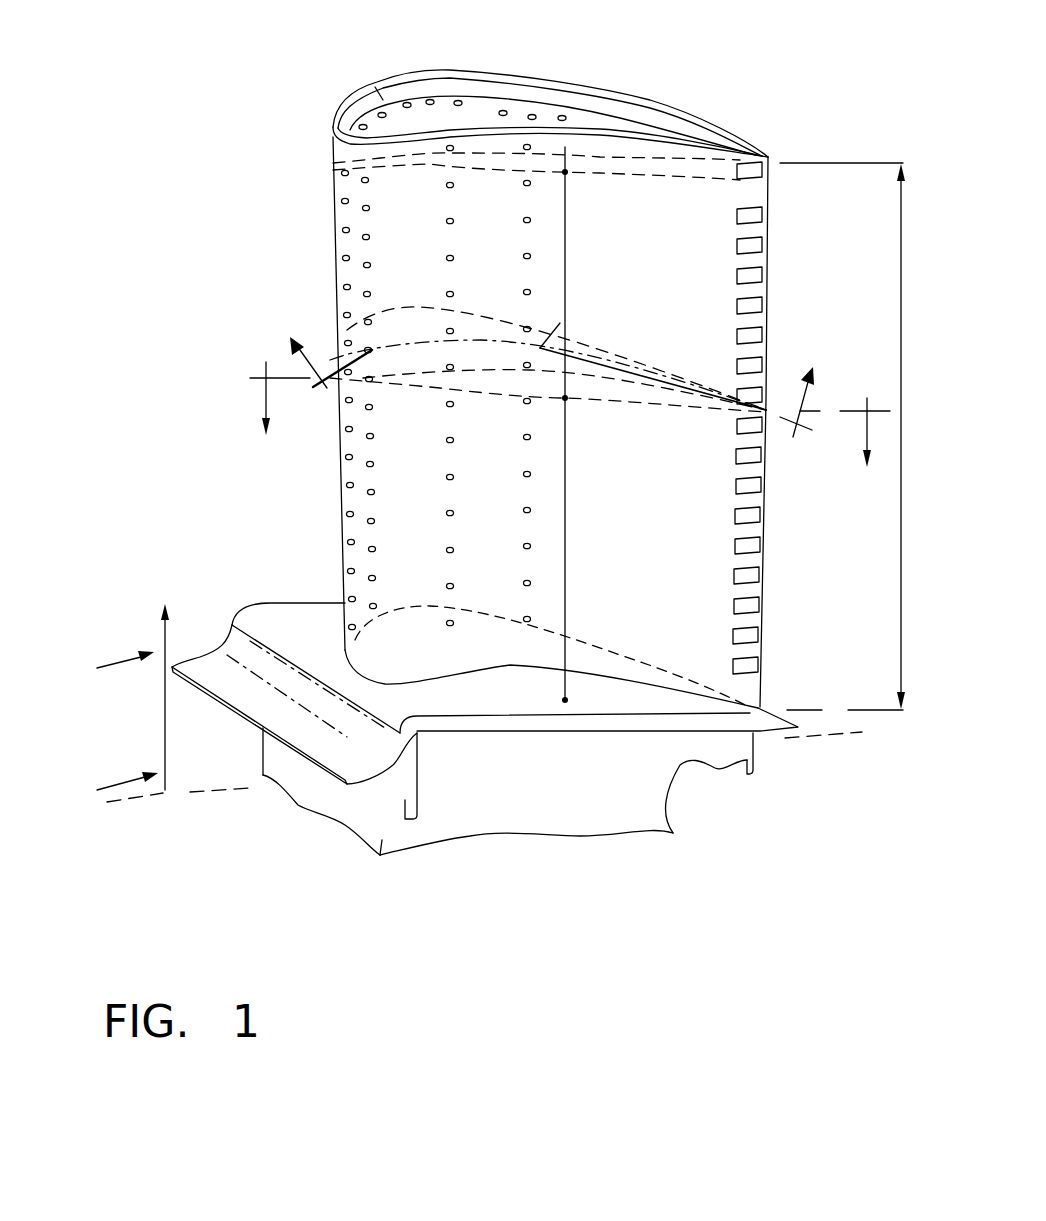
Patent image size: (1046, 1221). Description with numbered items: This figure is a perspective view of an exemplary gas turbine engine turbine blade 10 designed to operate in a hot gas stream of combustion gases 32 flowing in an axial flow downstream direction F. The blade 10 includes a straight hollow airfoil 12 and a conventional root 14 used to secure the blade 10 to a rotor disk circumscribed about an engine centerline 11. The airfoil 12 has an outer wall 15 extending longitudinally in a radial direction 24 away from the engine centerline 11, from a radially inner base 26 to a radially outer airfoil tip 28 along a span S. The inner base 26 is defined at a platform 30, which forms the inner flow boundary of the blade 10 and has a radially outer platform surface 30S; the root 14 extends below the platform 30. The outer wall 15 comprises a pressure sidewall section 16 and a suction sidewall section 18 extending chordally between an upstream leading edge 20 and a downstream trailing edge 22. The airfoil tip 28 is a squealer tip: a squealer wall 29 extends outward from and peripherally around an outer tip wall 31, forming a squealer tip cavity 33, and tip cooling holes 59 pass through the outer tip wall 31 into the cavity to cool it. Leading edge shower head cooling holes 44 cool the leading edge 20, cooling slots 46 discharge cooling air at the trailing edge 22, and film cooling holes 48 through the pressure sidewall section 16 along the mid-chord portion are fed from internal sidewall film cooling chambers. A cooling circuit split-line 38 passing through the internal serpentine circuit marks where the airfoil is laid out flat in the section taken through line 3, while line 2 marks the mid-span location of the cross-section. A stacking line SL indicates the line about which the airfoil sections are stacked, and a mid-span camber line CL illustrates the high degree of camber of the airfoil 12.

The turbine blade 10 is at (392, 900).
The engine centerline 11 is at (173, 793).
The airfoil 12 is at (475, 457).
The root 14 is at (493, 797).
The outer wall 15 is at (390, 243).
The pressure sidewall section 16 is at (397, 220).
The suction sidewall section 18 is at (367, 83).
The leading edge 20 is at (342, 467).
The trailing edge 22 is at (767, 325).
The radial direction 24 is at (165, 705).
The radially inner base 26 is at (510, 667).
The airfoil tip 28 is at (350, 167).
The squealer wall 29 is at (660, 110).
The platform 30 is at (653, 708).
The radially outer platform surface 30S is at (297, 610).
The outer tip wall 31 is at (477, 103).
The combustion gases 32 is at (103, 780).
The squealer tip cavity 33 is at (583, 107).
The cooling circuit split-line 38 is at (560, 323).
The leading edge film cooling holes 44 is at (347, 287).
The cooling slots 46 is at (753, 248).
The film cooling holes 48 is at (450, 221).
The tip cooling holes 59 is at (407, 102).
The span S is at (900, 555).
The stacking line SL is at (570, 540).
The mid-span camber line CL is at (683, 403).
The axial flow downstream direction F is at (110, 668).
The section line 2— 2 is at (570, 436).
The section line 3— 3 is at (552, 399).